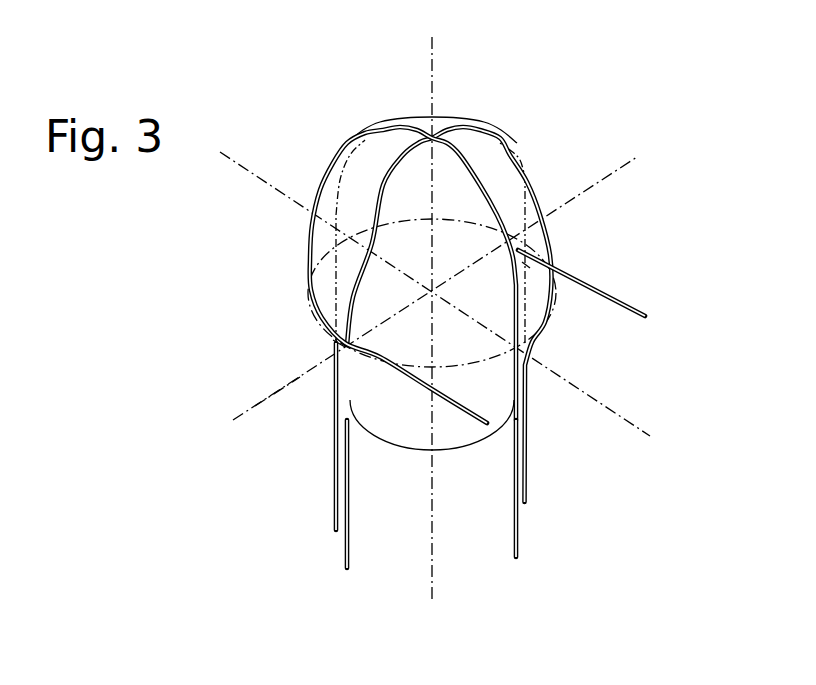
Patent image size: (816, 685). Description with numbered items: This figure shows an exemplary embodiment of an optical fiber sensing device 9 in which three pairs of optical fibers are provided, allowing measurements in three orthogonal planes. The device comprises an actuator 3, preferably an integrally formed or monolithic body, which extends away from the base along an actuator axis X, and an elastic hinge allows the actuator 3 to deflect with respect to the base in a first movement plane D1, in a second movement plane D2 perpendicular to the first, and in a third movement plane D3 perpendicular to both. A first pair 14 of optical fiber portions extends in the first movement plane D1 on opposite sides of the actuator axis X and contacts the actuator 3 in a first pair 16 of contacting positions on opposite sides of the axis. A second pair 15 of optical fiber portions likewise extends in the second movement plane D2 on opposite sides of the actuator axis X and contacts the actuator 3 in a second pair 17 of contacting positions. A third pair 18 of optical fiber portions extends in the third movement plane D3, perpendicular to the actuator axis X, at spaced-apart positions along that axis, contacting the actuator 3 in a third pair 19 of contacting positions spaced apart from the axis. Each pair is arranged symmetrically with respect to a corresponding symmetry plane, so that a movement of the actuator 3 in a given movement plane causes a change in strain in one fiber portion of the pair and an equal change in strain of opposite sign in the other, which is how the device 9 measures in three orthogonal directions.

The actuator 3 is at (498, 172).
The optical fiber sensing device 9 is at (266, 318).
The first pair of optical fiber portions 14 is at (341, 562).
The second pair of optical fiber portions 15 is at (525, 554).
The first pair of contacting positions 16 is at (330, 343).
The second pair of contacting positions 17 is at (348, 240).
The third pair of optical fiber portions 18 is at (634, 289).
The third pair of contacting positions 19 is at (335, 348).
The actuator axis X is at (432, 75).
The first movement plane D1 is at (296, 379).
The second movement plane D2 is at (603, 406).
The third movement plane D3 is at (603, 181).